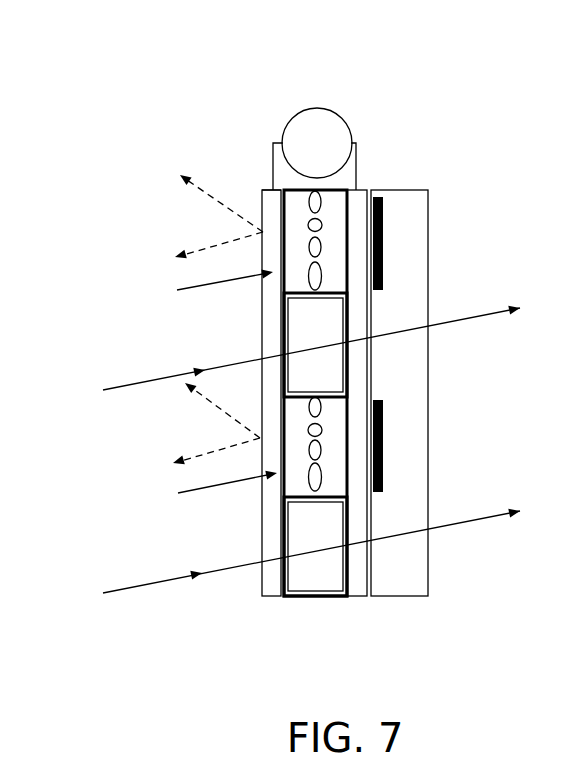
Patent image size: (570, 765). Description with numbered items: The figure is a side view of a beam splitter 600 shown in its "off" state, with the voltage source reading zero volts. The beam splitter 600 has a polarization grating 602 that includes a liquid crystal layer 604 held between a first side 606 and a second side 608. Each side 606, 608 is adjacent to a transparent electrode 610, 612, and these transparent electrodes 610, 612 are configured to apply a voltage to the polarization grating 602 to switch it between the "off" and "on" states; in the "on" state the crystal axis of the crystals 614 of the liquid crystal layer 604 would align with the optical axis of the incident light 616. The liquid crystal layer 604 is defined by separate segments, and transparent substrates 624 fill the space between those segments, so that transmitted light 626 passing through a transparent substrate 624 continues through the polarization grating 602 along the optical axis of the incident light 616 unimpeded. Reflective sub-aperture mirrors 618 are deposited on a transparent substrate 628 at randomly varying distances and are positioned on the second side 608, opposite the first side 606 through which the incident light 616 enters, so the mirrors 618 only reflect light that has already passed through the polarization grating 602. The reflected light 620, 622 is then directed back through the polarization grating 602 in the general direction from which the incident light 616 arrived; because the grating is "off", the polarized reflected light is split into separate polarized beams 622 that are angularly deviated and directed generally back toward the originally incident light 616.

The beam splitter 600 is at (480, 66).
The polarization grating 602 is at (298, 598).
The liquid crystal layer 604 is at (337, 243).
The first side 606 is at (262, 580).
The second side 608 is at (350, 433).
The transparent electrode 610 is at (270, 188).
The transparent electrode 612 is at (365, 187).
The crystals 614 is at (315, 485).
The incident light 616 is at (227, 283).
The reflective sub-aperture mirrors 618 is at (382, 213).
The reflected light 620 is at (190, 387).
The polarized beams 622 is at (182, 175).
The transparent substrates 624 is at (298, 333).
The transmitted light 626 is at (493, 308).
The transparent substrate 628 is at (430, 590).